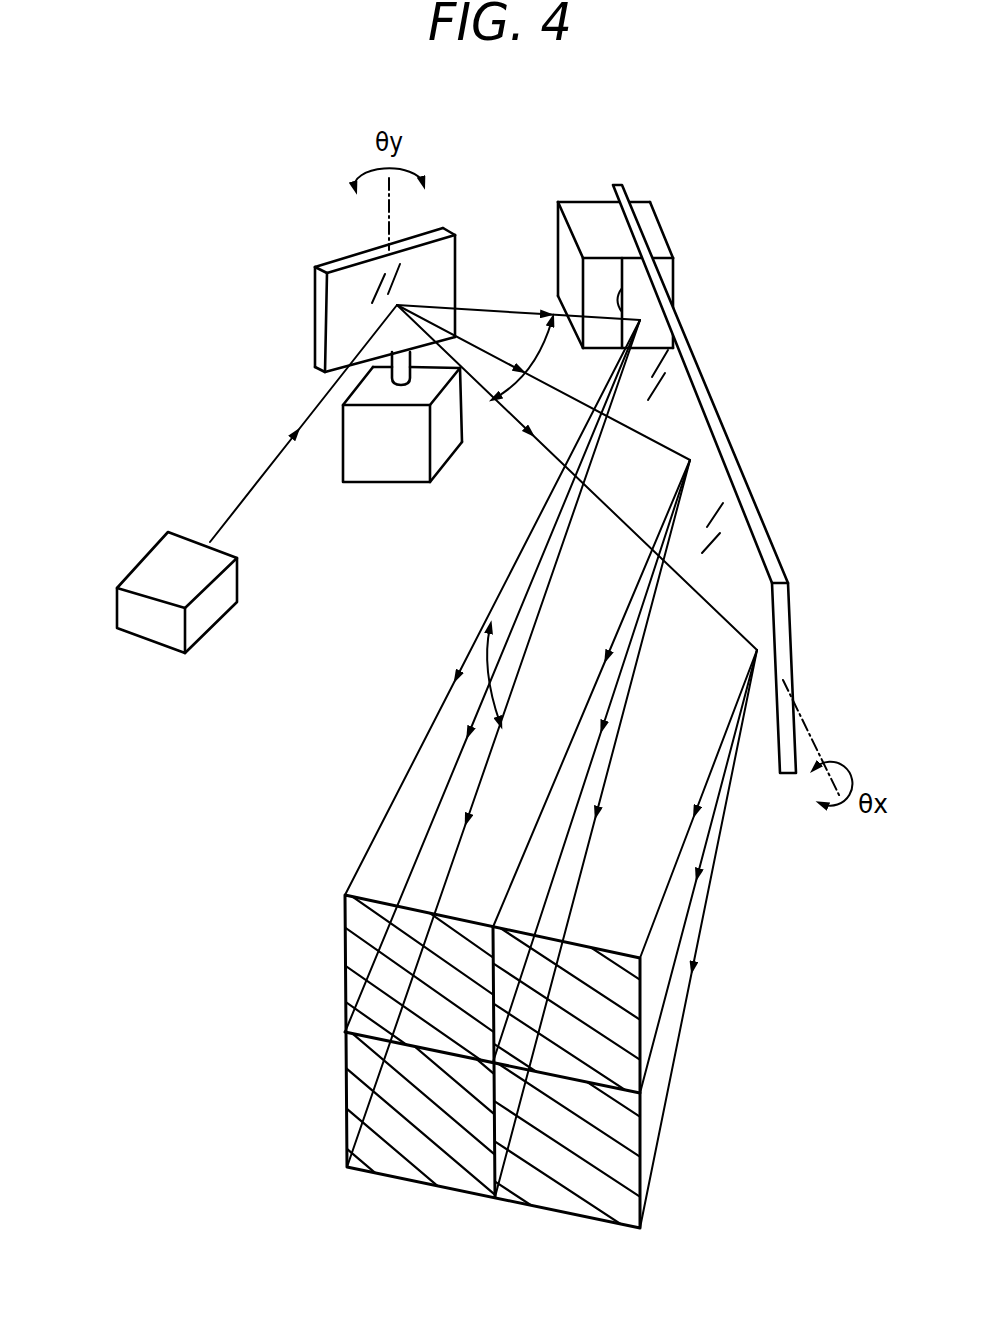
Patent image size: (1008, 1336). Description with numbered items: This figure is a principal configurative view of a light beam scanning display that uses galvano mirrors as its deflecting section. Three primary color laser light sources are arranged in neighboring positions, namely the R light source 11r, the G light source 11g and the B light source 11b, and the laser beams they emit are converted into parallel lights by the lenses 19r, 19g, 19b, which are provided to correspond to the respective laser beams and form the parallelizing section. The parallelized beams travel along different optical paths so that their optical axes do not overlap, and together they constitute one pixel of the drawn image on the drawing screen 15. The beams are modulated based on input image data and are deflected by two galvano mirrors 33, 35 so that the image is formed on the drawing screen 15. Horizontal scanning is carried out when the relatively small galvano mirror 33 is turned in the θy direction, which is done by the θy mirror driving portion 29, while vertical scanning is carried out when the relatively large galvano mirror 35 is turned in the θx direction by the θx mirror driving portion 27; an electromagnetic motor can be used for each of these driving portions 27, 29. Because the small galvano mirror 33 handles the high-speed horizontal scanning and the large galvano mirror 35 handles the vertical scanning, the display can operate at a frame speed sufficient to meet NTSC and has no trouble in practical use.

The R light source 11r is at (147, 645).
The G light source 11g is at (147, 645).
The B light source 11b is at (147, 645).
The lens 19r is at (147, 645).
The lens 19g is at (147, 645).
The lens 19b is at (150, 625).
The drawing screen 15 is at (568, 1182).
The θx mirror driving portion 27 is at (588, 213).
The θy mirror driving portion 29 is at (380, 462).
The galvano mirror 33 is at (335, 305).
The galvano mirror 35 is at (697, 343).